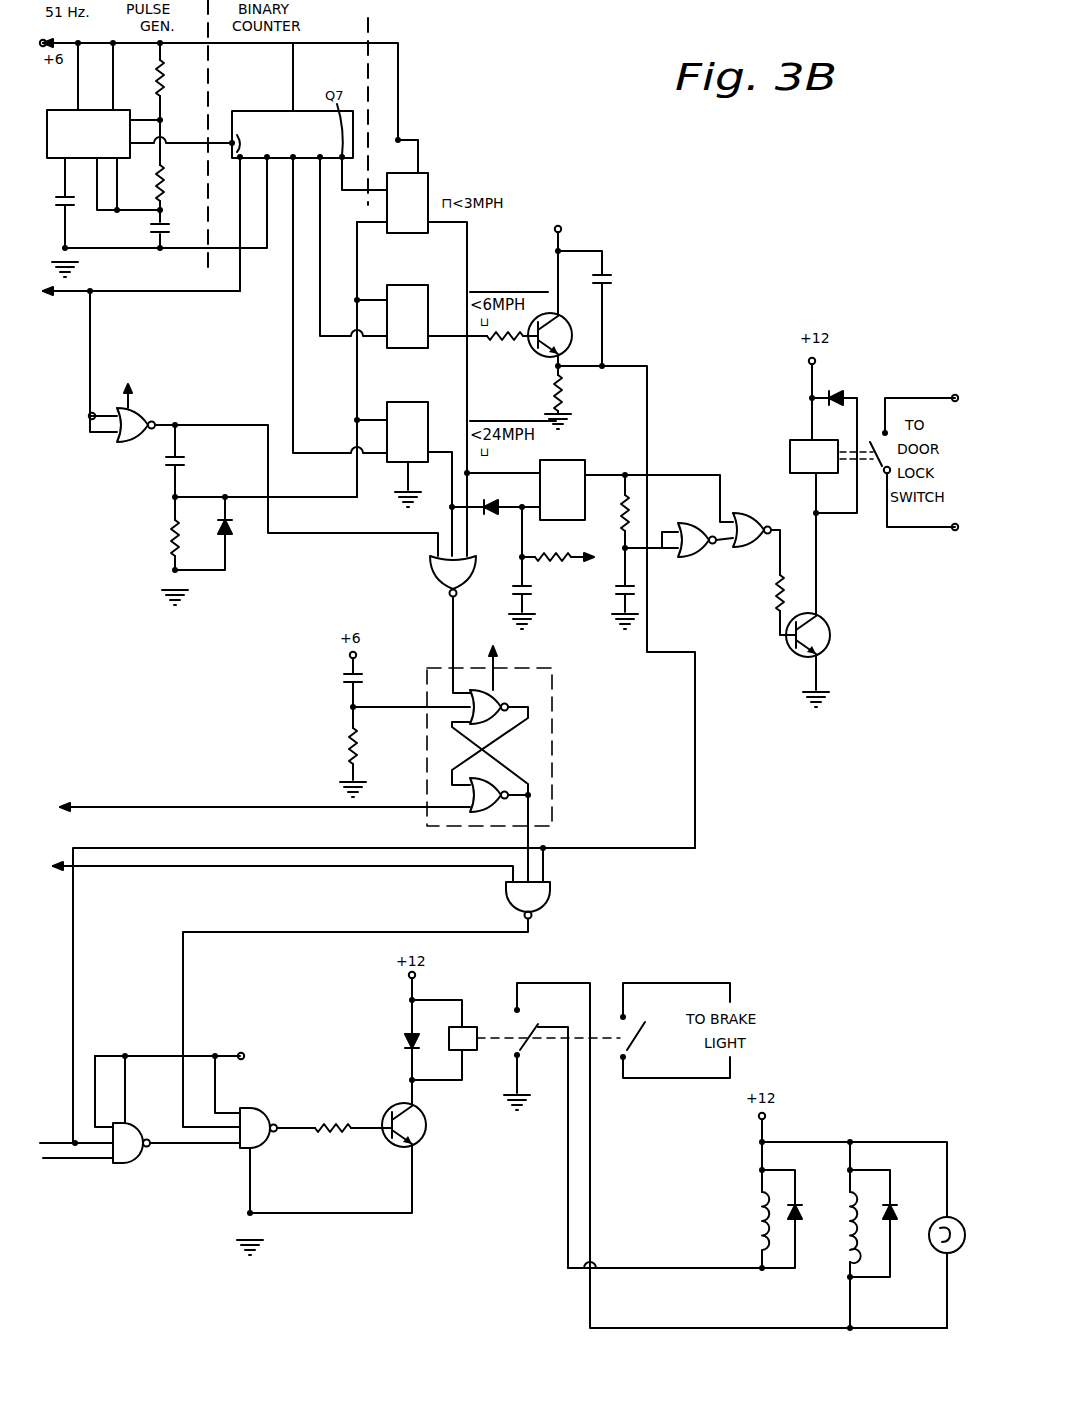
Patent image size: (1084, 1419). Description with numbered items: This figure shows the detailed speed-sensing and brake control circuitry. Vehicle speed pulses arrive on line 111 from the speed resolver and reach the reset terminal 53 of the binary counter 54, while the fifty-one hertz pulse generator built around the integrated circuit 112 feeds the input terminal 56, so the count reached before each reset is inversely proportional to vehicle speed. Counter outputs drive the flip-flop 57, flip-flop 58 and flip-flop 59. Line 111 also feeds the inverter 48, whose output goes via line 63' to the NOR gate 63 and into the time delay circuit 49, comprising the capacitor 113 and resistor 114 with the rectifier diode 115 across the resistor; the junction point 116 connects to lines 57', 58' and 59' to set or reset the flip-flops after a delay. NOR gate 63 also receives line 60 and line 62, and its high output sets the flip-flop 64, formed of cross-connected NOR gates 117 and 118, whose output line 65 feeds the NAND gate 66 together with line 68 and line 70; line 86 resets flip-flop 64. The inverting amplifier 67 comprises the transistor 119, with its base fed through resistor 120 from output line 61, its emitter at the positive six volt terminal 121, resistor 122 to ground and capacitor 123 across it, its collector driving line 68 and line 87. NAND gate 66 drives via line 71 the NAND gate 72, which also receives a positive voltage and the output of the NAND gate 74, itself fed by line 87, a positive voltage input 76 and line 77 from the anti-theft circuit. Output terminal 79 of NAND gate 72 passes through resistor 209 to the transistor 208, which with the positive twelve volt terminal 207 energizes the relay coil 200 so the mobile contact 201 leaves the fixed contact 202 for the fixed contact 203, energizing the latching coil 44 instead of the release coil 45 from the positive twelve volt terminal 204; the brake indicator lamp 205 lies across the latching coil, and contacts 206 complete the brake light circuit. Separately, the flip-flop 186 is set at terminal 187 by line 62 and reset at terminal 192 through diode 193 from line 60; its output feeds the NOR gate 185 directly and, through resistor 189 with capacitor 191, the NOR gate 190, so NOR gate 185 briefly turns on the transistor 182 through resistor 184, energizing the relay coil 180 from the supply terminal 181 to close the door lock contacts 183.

The 556 integrated circuit 112 is at (60, 110).
The line 111 is at (66, 294).
The binary counter 54 is at (266, 108).
The input terminal 56 is at (237, 135).
The reset terminal 53 is at (237, 154).
The flip-flop 59 is at (448, 183).
The line 59' is at (385, 241).
The flip-flop 58 is at (424, 298).
The line 58' is at (348, 338).
The flip-flop 57 is at (404, 412).
The line 57' is at (348, 407).
The output line 62 is at (470, 270).
The output line 61 is at (448, 340).
The line 60 is at (450, 494).
The NOR gate 63 is at (439, 583).
The line 63' is at (298, 480).
The inverter 48 is at (153, 415).
The time delay circuit 49 is at (157, 487).
The capacitor 113 is at (166, 462).
The resistor 114 is at (170, 546).
The rectifier diode 115 is at (230, 534).
The junction point 116 is at (178, 496).
The +6 volt terminal 121 is at (566, 228).
The capacitor 123 is at (612, 283).
The inverting amplifier 67 is at (572, 322).
The transistor 119 is at (575, 343).
The resistor 120 is at (504, 340).
The resistor 122 is at (566, 394).
The line 68 is at (650, 408).
The set input terminal 187 is at (562, 462).
The flip-flop 186 is at (590, 475).
The resistor 189 is at (632, 516).
The NOR gate 185 is at (752, 515).
The NOR gate 190 is at (690, 556).
The capacitor 191 is at (620, 594).
The reset terminal 192 is at (536, 522).
The rectifier diode 193 is at (492, 514).
The relay coil 180 is at (790, 456).
The +12 volt power supply terminal 181 is at (820, 362).
The normally-open contacts 183 is at (876, 478).
The resistor 184 is at (778, 590).
The transistor 182 is at (832, 635).
The flip-flop 64 is at (555, 718).
The NOR gate 117 is at (503, 704).
The NOR gate 118 is at (507, 776).
The output line 65 is at (530, 846).
The NAND gate 66 is at (554, 896).
The line 86 is at (236, 806).
The line 87 is at (234, 847).
The line 70 is at (280, 867).
The line 71 is at (348, 932).
The supply line 76 is at (245, 1052).
The NAND gate 72 is at (250, 1108).
The NAND gate 74 is at (133, 1166).
The line 77 is at (60, 1162).
The output terminal 79 is at (276, 1134).
The resistor 209 is at (334, 1120).
The transistor 208 is at (430, 1136).
The +12 volt terminal 207 is at (408, 978).
The relay operating coil 200 is at (468, 1027).
The second fixed contact 203 is at (521, 1006).
The first fixed contact 202 is at (534, 1030).
The mobile relay contact 201 is at (540, 1052).
The normally-open relay contacts 206 is at (635, 1020).
The +12 volt terminal 204 is at (758, 1118).
The release coil 45 is at (756, 1222).
The latching coil 44 is at (843, 1246).
The brake indicator lamp 205 is at (942, 1256).